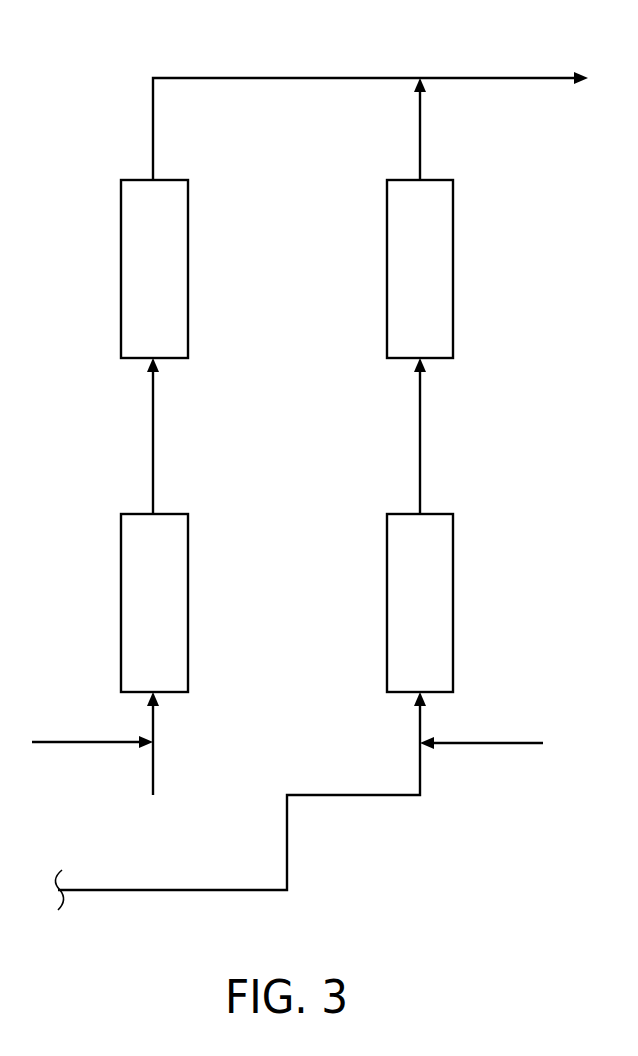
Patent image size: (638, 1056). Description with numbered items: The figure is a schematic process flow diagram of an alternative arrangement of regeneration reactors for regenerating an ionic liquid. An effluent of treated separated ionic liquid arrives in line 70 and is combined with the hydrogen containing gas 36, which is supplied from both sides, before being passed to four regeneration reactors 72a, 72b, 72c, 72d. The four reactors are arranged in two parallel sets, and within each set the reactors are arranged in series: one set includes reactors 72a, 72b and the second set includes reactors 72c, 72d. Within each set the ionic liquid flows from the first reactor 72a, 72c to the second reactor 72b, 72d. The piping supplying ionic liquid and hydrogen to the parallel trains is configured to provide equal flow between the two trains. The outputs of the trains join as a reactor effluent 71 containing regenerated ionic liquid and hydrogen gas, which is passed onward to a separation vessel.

The reactor effluent 71 is at (252, 76).
The regeneration reactor 72a is at (454, 602).
The regeneration reactor 72b is at (454, 268).
The regeneration reactor 72c is at (189, 602).
The regeneration reactor 72d is at (189, 268).
The line 70 is at (288, 841).
The hydrogen containing gas 36 is at (94, 744).